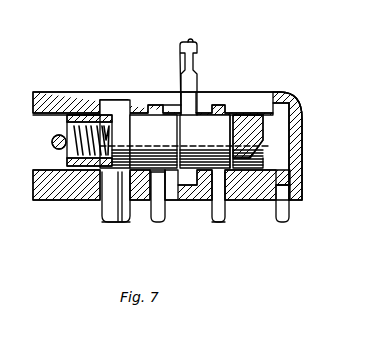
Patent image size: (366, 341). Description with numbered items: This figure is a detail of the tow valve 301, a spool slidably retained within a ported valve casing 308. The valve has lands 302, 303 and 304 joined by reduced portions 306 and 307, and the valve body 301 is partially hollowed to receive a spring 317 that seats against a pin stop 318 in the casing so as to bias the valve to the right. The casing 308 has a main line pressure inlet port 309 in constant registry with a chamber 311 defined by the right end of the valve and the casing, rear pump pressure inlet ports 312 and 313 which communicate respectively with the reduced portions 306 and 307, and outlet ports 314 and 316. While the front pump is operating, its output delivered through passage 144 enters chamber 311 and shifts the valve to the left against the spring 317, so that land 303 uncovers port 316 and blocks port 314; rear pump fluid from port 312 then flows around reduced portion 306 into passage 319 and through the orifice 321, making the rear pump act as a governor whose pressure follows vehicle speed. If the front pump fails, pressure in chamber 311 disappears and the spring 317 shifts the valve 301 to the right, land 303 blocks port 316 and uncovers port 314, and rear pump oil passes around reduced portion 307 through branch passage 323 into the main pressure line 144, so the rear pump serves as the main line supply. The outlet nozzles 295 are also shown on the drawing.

The valve land 302 is at (78, 102).
The reduced portion 307 is at (117, 127).
The valve land 303 is at (140, 120).
The outlet port 316 is at (184, 91).
The passage 319 is at (194, 41).
The orifice 321 is at (199, 70).
The reduced portion 306 is at (216, 137).
The valve land 304 is at (240, 133).
The ported valve casing 308 is at (276, 91).
The chamber 311 is at (288, 114).
The tow valve 301 is at (273, 163).
The main line pressure inlet port 309 is at (283, 186).
The rear pump pressure inlet port 312 is at (224, 186).
The outlet port 314 is at (165, 202).
The rear pump pressure inlet port 313 is at (118, 173).
The outlet nozzles 295 is at (110, 222).
The branch passage 323 is at (153, 223).
The main pressure line 144 is at (285, 223).
The pin stop 318 is at (52, 141).
The spring 317 is at (67, 152).